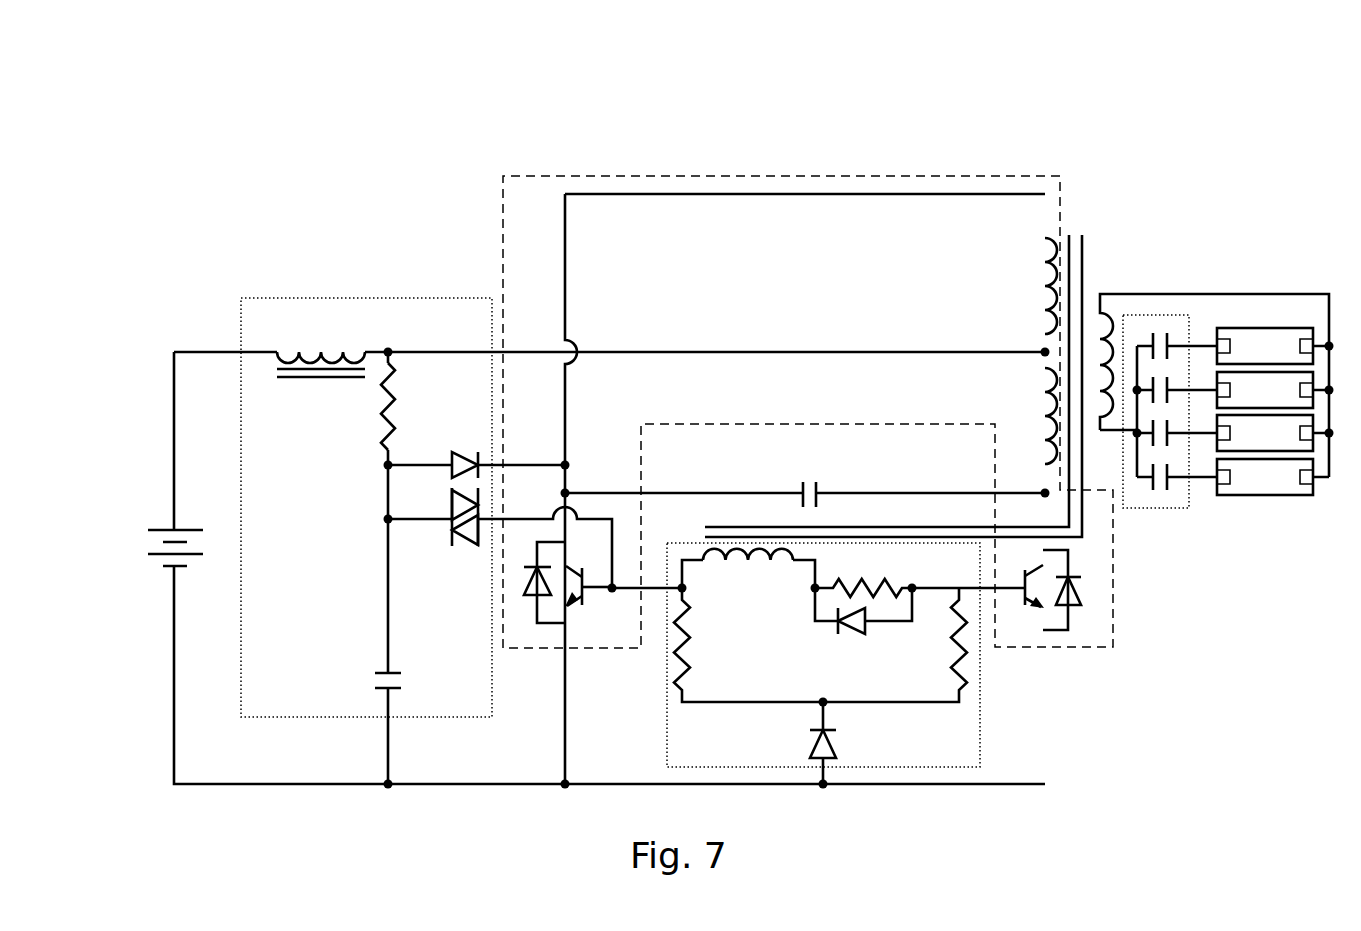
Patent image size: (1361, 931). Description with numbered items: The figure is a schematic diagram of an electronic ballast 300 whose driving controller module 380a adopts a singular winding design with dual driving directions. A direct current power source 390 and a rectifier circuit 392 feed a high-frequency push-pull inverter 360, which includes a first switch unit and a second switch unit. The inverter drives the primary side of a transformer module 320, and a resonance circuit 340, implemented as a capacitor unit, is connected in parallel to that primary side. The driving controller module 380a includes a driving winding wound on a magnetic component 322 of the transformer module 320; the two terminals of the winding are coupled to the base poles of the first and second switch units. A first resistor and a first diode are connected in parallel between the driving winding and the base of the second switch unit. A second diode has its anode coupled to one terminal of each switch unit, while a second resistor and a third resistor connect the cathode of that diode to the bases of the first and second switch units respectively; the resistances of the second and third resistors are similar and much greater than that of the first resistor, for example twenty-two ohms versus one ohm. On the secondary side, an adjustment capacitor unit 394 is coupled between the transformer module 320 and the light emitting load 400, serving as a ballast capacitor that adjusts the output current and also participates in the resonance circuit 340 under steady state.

The electronic ballast 300 is at (378, 140).
The transformer module 320 is at (1112, 274).
The magnetic component 322 is at (1083, 253).
The resonance circuit 340 is at (818, 487).
The high-frequency push-pull inverter 360 is at (695, 176).
The driving controller module 380a is at (920, 767).
The direct current (DC) power source 390 is at (170, 530).
The rectifier circuit 392 is at (377, 298).
The adjustment capacitor unit 394 is at (1170, 508).
The light emitting load 400 is at (1271, 518).